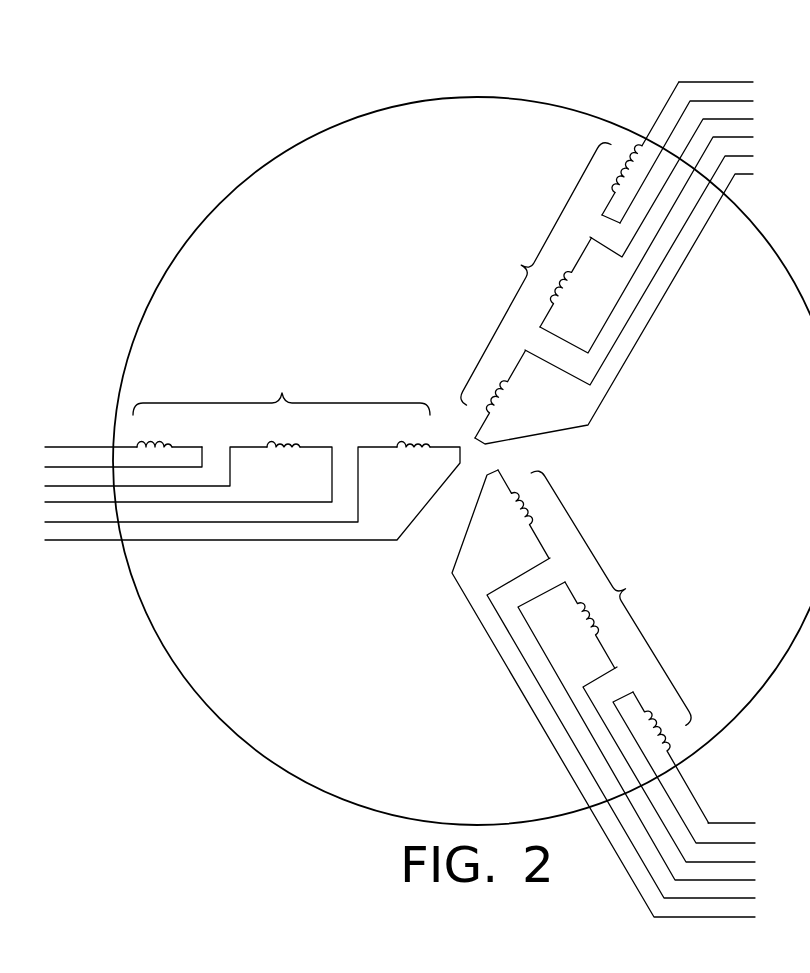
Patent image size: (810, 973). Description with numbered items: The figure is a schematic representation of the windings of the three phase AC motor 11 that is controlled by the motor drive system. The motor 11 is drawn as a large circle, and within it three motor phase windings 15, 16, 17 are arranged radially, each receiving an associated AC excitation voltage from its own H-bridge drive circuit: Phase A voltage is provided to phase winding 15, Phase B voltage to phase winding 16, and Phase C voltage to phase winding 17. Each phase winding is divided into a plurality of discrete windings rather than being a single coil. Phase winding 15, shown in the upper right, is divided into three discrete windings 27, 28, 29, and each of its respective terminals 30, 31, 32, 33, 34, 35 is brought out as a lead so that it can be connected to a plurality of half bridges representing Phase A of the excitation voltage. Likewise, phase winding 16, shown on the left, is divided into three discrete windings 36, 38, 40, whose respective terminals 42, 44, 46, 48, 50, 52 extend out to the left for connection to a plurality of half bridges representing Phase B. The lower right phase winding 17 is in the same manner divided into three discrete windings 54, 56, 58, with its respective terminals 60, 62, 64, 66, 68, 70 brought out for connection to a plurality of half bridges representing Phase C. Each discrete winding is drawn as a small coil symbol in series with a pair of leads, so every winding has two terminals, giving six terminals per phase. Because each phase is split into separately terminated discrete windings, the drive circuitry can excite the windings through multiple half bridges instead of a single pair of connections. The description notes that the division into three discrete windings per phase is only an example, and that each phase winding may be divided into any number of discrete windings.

The three phase AC motor 11 is at (350, 95).
The phase winding 15 is at (623, 247).
The phase winding 16 is at (230, 471).
The phase winding 17 is at (627, 707).
The discrete winding 27 is at (622, 176).
The discrete winding 28 is at (560, 285).
The discrete winding 29 is at (501, 382).
The terminal 30 is at (720, 82).
The terminal 31 is at (733, 100).
The terminal 32 is at (745, 118).
The terminal 33 is at (745, 137).
The terminal 34 is at (745, 156).
The terminal 35 is at (745, 174).
The discrete winding 36 is at (139, 446).
The discrete winding 38 is at (282, 446).
The discrete winding 40 is at (414, 445).
The terminal 42 is at (68, 446).
The terminal 44 is at (57, 467).
The terminal 46 is at (57, 486).
The terminal 48 is at (53, 504).
The terminal 50 is at (55, 523).
The terminal 52 is at (58, 542).
The discrete winding 54 is at (652, 718).
The discrete winding 56 is at (597, 622).
The discrete winding 58 is at (533, 512).
The terminal 60 is at (735, 823).
The terminal 62 is at (745, 842).
The terminal 64 is at (740, 861).
The terminal 66 is at (743, 879).
The terminal 68 is at (743, 895).
The terminal 70 is at (737, 918).